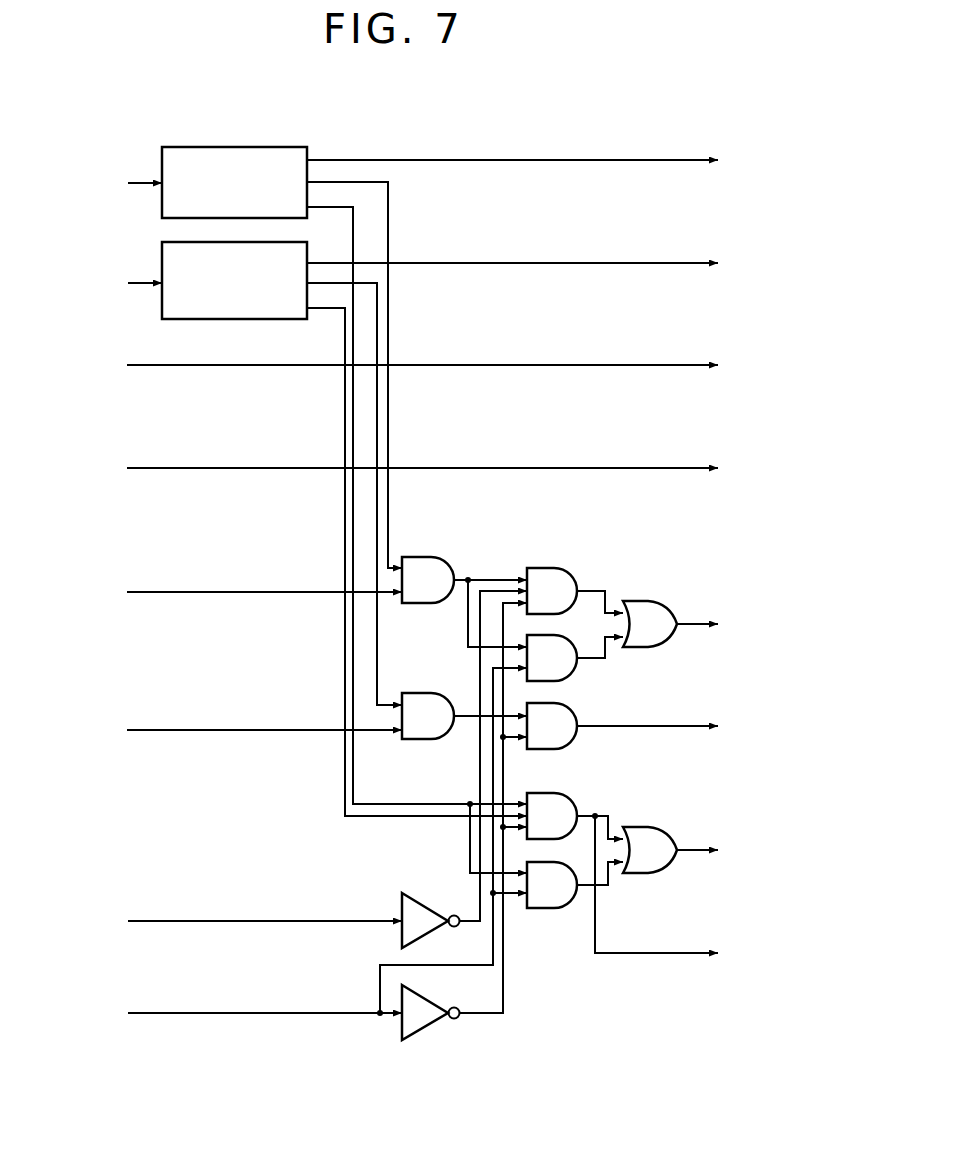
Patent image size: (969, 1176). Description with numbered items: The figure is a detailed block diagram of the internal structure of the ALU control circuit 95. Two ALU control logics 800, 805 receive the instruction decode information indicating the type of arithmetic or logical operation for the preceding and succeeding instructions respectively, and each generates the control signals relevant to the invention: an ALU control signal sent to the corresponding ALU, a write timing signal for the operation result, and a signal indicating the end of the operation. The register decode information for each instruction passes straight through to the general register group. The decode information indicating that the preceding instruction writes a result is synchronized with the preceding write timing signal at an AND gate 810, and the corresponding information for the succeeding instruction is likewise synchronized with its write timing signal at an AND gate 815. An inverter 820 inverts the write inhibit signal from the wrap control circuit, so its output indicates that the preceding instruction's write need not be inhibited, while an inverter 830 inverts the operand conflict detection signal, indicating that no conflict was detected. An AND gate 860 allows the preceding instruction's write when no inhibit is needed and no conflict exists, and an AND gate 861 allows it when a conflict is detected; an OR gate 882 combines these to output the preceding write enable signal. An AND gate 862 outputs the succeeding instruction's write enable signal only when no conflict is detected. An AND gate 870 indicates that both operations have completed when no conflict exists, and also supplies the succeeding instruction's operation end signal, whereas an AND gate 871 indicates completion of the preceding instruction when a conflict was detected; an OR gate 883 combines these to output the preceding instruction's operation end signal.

The ALU control circuit 95 is at (448, 100).
The ALU control logic 800 is at (240, 146).
The ALU control logic 805 is at (242, 321).
The AND gate 810 is at (428, 557).
The AND gate 815 is at (431, 693).
The inverter 820 is at (423, 893).
The inverter 830 is at (419, 1040).
The AND gate 860 is at (563, 568).
The AND gate 861 is at (575, 672).
The AND gate 862 is at (577, 740).
The AND gate 870 is at (557, 795).
The AND gate 871 is at (545, 908).
The OR gate 882 is at (656, 607).
The OR gate 883 is at (661, 827).